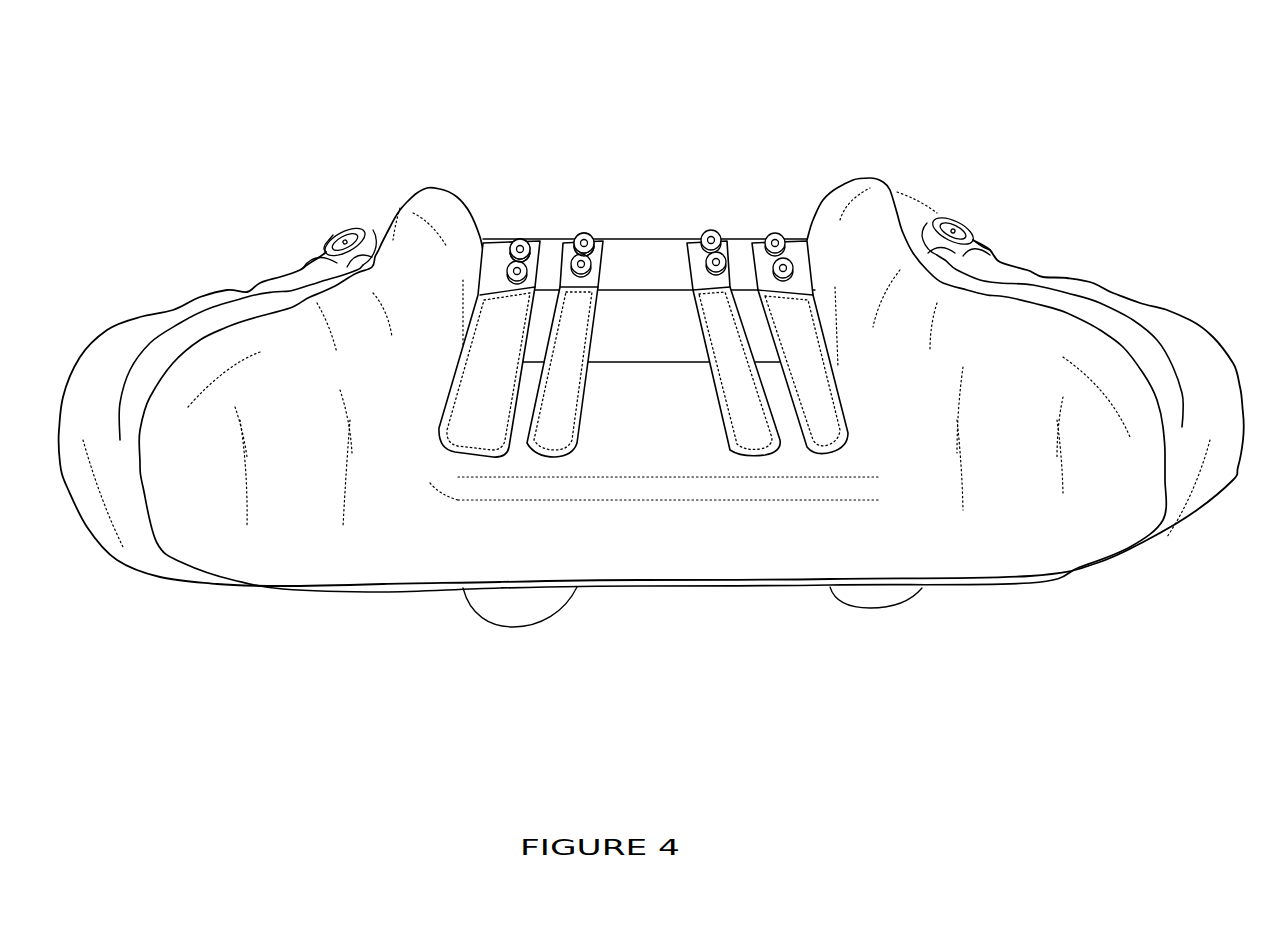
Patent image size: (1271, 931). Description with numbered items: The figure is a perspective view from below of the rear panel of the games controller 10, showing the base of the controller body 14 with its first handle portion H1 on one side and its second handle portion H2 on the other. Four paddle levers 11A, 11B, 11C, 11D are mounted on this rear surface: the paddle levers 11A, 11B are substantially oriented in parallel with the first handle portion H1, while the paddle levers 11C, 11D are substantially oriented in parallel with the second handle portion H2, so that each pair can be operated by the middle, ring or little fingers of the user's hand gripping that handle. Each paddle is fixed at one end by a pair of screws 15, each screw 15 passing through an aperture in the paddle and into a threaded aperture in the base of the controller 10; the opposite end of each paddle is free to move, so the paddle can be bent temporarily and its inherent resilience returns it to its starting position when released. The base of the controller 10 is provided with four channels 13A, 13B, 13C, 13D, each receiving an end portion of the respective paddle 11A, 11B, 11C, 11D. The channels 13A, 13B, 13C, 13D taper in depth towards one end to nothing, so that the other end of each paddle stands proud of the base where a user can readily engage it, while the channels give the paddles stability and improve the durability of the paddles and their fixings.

The games controller 10 is at (340, 150).
The controller body 14 is at (333, 237).
The screw 15 is at (521, 243).
The paddle lever 11A is at (471, 425).
The paddle lever 11B is at (538, 445).
The paddle lever 11C is at (747, 440).
The paddle lever 11D is at (827, 440).
The channel 13A is at (490, 250).
The channel 13B is at (612, 238).
The channel 13C is at (730, 238).
The channel 13D is at (803, 240).
The first handle portion H1 is at (275, 603).
The second handle portion H2 is at (1035, 540).